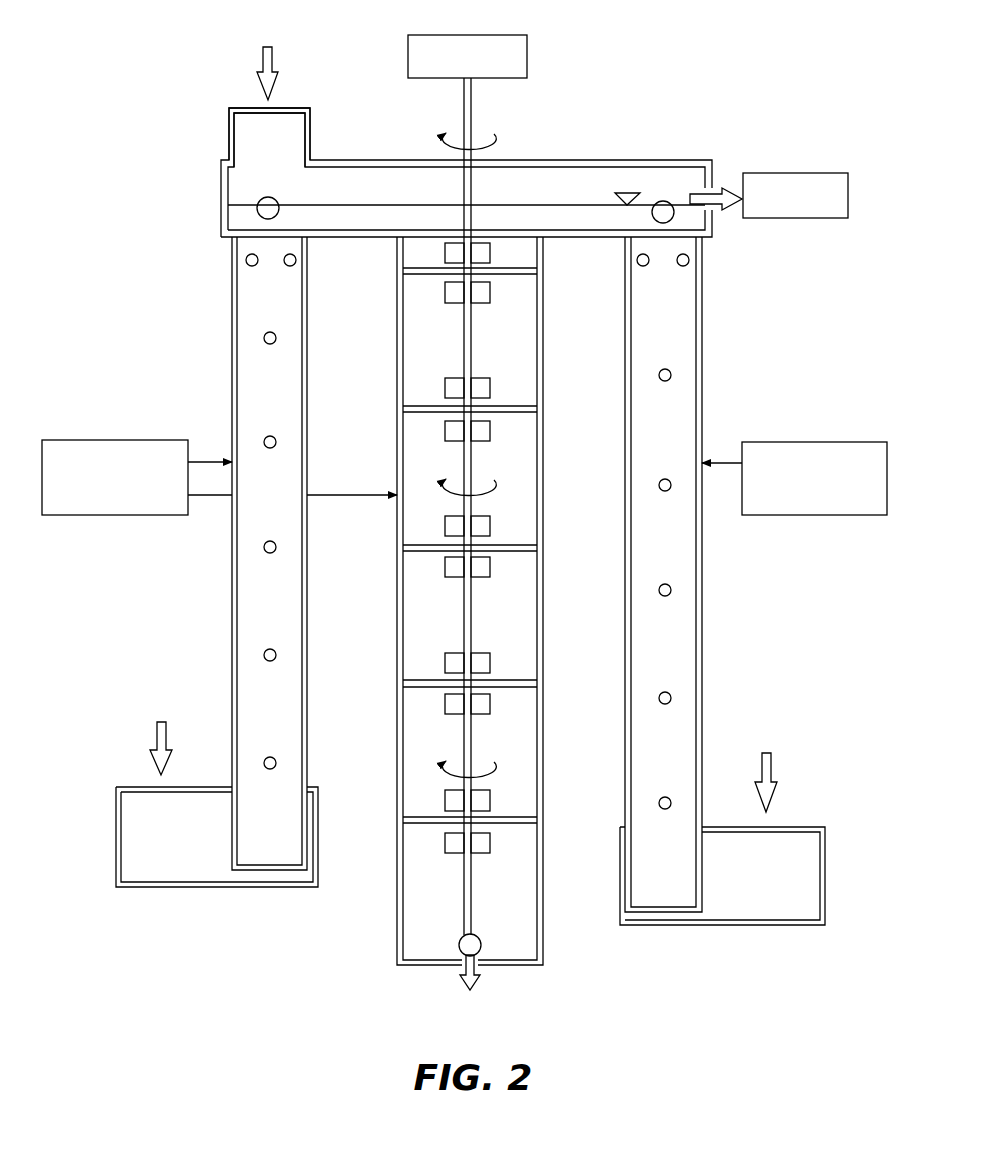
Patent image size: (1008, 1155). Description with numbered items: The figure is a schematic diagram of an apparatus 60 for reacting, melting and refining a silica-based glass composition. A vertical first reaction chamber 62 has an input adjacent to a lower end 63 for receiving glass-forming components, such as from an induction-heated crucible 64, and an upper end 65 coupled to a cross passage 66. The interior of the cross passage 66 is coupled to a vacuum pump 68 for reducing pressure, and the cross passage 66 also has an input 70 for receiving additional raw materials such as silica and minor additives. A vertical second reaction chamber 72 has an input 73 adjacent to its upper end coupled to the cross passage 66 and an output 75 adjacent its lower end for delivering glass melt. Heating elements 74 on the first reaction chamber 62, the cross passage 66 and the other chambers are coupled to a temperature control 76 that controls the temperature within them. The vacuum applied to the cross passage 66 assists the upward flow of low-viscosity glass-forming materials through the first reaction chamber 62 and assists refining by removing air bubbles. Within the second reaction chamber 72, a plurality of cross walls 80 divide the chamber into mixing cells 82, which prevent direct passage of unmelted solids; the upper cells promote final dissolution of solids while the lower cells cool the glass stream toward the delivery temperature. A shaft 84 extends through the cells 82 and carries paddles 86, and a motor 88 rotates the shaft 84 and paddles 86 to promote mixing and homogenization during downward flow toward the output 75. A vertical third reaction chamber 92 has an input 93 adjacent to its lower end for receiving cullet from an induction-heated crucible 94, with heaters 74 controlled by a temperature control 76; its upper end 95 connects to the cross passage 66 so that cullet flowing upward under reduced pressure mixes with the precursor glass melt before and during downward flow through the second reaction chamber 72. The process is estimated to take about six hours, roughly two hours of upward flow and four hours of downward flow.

The apparatus 60 is at (183, 320).
The vertical first reaction chamber 62 is at (232, 355).
The lower end 63 is at (270, 850).
The induction-heated crucible 64 is at (157, 887).
The upper end 65 is at (272, 240).
The cross passage 66 is at (648, 160).
The vacuum pump 68 is at (806, 173).
The input 70 is at (229, 145).
The vertical second reaction chamber 72 is at (545, 943).
The input 73 is at (517, 243).
The heating elements 74 is at (258, 210).
The output 75 is at (465, 965).
The temperature control 76 is at (107, 515).
The cross wall 80 is at (515, 275).
The mixing cells 82 is at (525, 630).
The shaft 84 is at (472, 603).
The paddles 86 is at (487, 523).
The motor 88 is at (527, 40).
The vertical third reaction chamber 92 is at (702, 628).
The input 93 is at (668, 895).
The induction-heated crucible 94 is at (825, 870).
The upper end 95 is at (660, 250).